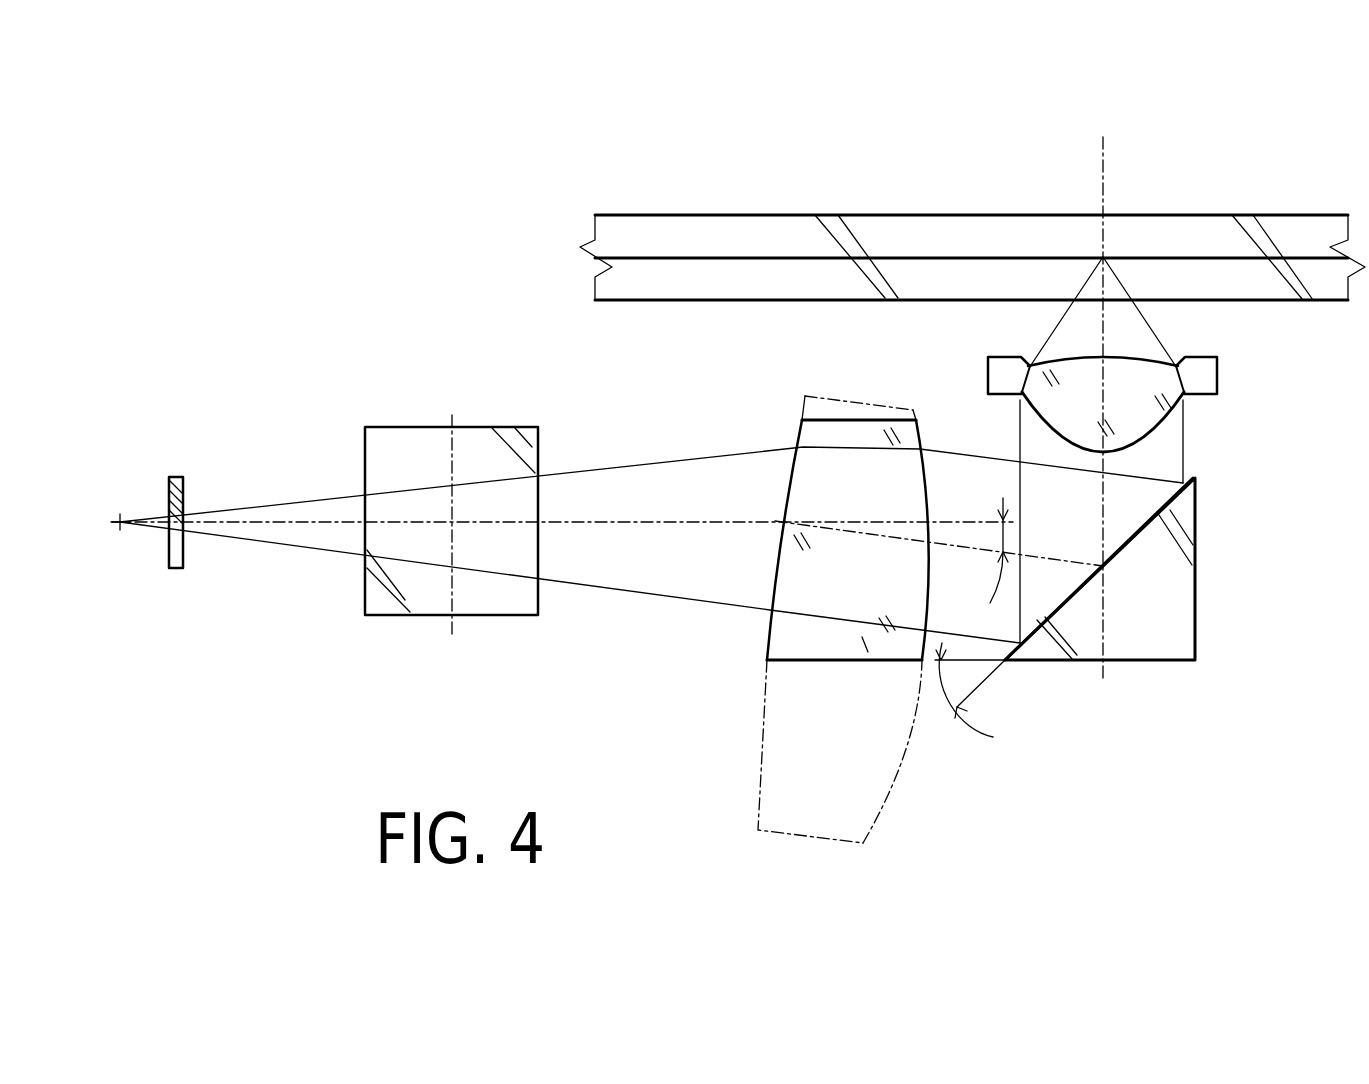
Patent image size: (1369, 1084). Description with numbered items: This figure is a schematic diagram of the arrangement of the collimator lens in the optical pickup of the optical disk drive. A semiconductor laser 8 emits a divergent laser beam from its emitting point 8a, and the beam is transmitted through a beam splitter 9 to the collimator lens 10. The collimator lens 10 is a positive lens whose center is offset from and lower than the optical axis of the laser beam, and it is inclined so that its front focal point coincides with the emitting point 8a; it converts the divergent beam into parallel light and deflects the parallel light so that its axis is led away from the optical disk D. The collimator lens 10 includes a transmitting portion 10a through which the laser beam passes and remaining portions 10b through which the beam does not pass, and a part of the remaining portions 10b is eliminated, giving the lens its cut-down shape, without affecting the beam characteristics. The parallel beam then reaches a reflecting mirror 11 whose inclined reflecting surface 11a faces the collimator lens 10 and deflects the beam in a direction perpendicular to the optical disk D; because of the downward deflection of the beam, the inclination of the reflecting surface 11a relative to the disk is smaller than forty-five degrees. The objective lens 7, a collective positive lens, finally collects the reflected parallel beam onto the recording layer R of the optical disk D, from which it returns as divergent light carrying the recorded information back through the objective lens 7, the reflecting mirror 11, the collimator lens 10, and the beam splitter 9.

The objective lens 7 is at (1217, 372).
The semiconductor laser 8 is at (175, 477).
The emitting point 8a is at (120, 526).
The beam splitter 9 is at (425, 427).
The collimator lens 10 is at (818, 598).
The transmitting portion 10a is at (862, 637).
The remaining portions 10b is at (803, 405).
The reflecting mirror 11 is at (1178, 615).
The reflecting surface 11a is at (1075, 595).
The optical disk D is at (733, 215).
The recording layer R is at (980, 258).